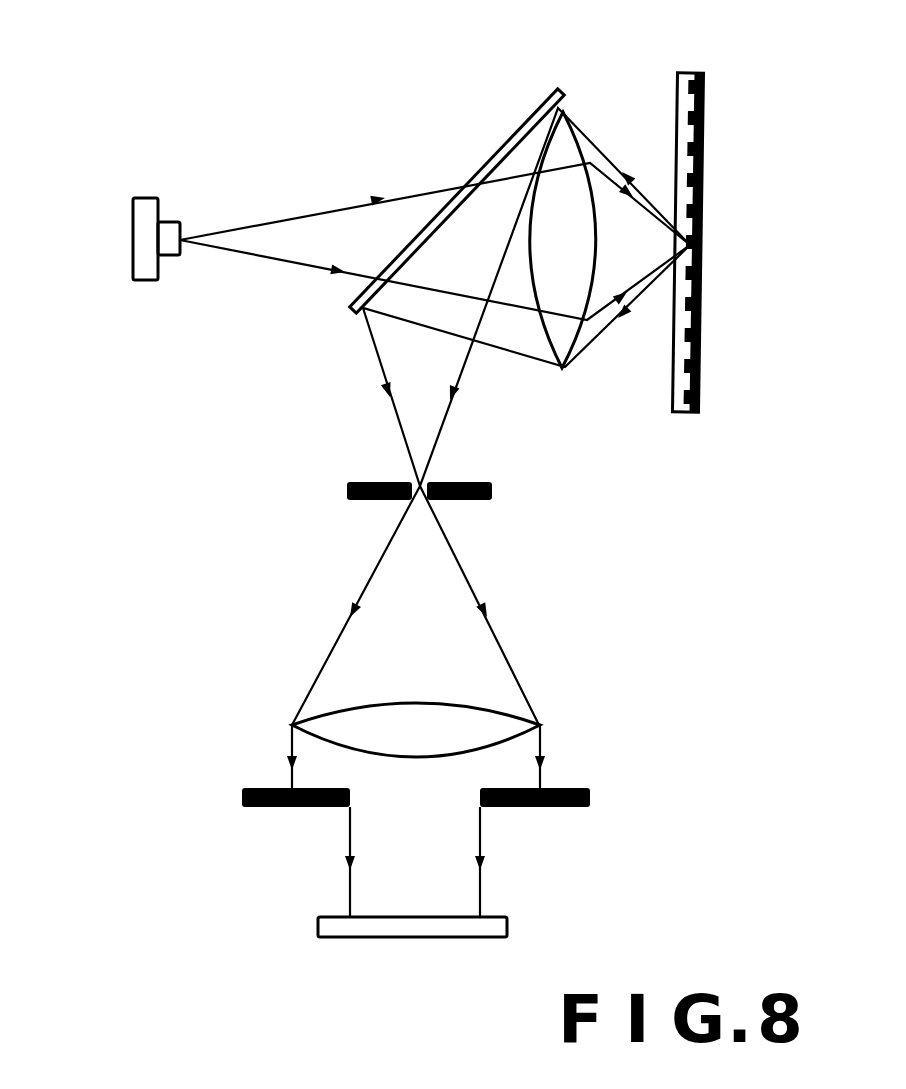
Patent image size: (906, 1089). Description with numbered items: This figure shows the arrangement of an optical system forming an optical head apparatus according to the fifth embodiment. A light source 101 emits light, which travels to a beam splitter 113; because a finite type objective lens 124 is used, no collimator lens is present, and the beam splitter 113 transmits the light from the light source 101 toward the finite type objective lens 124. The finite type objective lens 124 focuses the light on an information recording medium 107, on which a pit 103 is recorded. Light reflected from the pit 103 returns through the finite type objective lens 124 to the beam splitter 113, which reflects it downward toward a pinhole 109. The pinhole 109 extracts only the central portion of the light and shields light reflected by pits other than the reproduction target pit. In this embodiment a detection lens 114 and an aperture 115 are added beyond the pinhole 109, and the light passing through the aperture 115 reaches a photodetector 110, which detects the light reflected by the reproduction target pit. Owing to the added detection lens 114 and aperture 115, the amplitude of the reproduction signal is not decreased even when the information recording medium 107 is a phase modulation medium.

The light source 101 is at (143, 282).
The pit 103 is at (703, 113).
The information recording medium 107 is at (682, 410).
The pinhole 109 is at (347, 487).
The photodetector 110 is at (318, 927).
The beam splitter 113 is at (542, 102).
The detection lens 114 is at (310, 728).
The aperture 115 is at (242, 793).
The finite type objective lens 124 is at (565, 137).